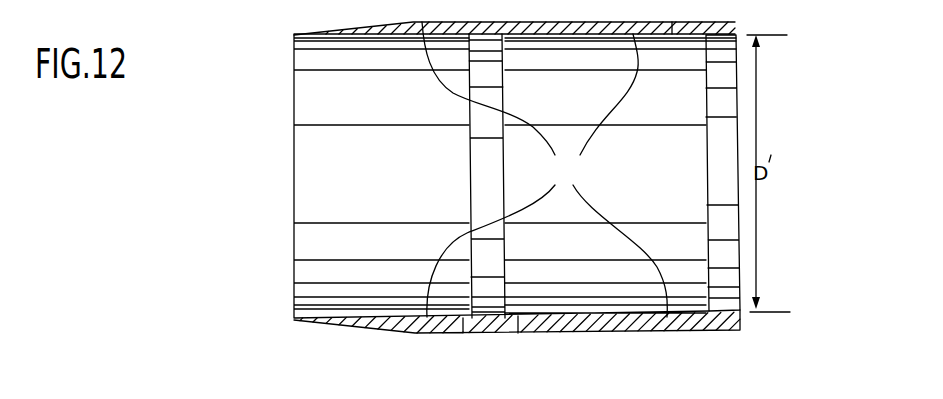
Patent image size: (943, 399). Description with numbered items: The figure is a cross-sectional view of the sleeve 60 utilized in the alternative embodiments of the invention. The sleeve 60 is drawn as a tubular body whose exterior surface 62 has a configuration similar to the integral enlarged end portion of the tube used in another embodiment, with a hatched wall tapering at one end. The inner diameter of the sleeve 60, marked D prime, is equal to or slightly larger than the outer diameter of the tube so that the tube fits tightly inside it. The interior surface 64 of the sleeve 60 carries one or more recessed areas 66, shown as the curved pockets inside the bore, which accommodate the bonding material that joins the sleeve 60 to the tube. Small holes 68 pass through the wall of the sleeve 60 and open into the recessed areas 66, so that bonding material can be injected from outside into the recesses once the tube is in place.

The sleeve 60 is at (196, 233).
The exterior surface 62 is at (452, 27).
The interior surface 64 is at (757, 309).
The recessed areas 66 is at (544, 169).
The small holes 68 is at (517, 334).